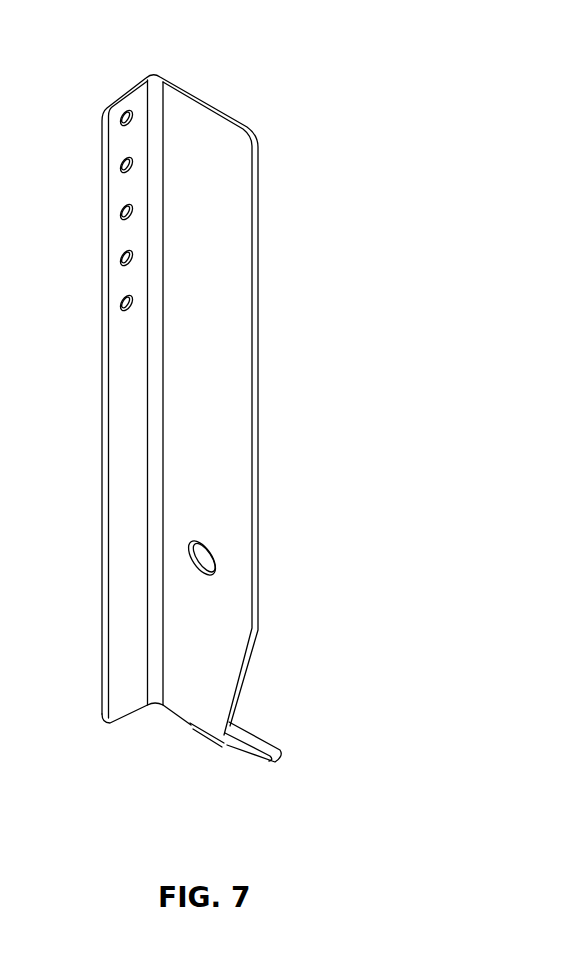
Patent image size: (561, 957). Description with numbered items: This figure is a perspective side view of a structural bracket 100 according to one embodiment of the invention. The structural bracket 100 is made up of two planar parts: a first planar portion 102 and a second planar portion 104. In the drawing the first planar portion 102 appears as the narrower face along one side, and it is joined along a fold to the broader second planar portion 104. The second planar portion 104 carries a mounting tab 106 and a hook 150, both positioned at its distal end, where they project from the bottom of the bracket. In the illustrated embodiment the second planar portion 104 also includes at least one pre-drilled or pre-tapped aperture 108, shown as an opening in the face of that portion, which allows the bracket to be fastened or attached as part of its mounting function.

The structural bracket 100 is at (218, 73).
The first planar portion 102 is at (130, 362).
The second planar portion 104 is at (220, 322).
The mounting tab 106 is at (205, 748).
The pre-drilled or pre-tapped aperture 108 is at (213, 565).
The hook 150 is at (280, 758).